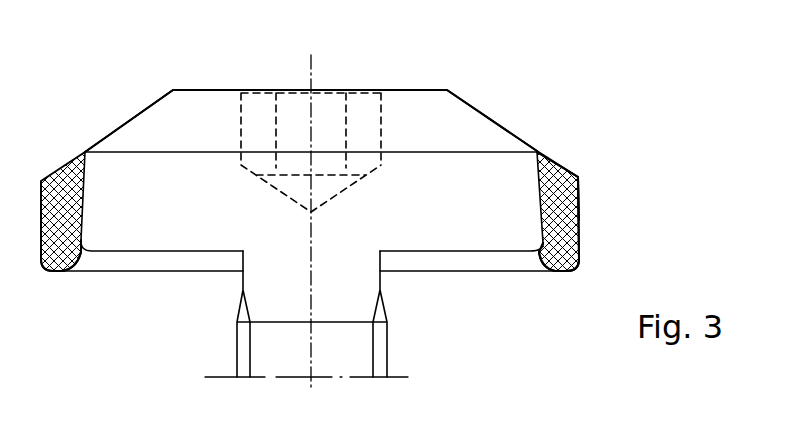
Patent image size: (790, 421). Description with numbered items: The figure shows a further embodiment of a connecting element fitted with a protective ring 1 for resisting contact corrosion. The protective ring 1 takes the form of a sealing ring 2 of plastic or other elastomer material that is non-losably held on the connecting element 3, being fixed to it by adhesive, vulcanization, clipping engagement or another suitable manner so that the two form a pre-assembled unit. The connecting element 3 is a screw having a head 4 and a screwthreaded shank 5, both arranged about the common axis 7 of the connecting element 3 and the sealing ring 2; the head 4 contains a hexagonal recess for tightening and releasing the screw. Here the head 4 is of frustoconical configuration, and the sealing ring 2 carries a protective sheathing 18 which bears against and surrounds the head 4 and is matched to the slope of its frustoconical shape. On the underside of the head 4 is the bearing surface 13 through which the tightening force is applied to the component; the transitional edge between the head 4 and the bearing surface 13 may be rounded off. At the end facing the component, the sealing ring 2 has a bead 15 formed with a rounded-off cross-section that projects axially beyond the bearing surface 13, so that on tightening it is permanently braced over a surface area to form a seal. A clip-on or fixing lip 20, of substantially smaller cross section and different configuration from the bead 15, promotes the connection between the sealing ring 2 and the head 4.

The protective ring 1 is at (604, 235).
The sealing ring 2 is at (558, 207).
The connecting element 3 is at (478, 102).
The head 4 is at (204, 118).
The screwthreaded shank 5 is at (365, 348).
The axis 7 is at (311, 152).
The bearing surface 13 is at (145, 252).
The bead 15 is at (565, 271).
The protective sheathing 18 is at (553, 165).
The fixing lip 20 is at (78, 253).